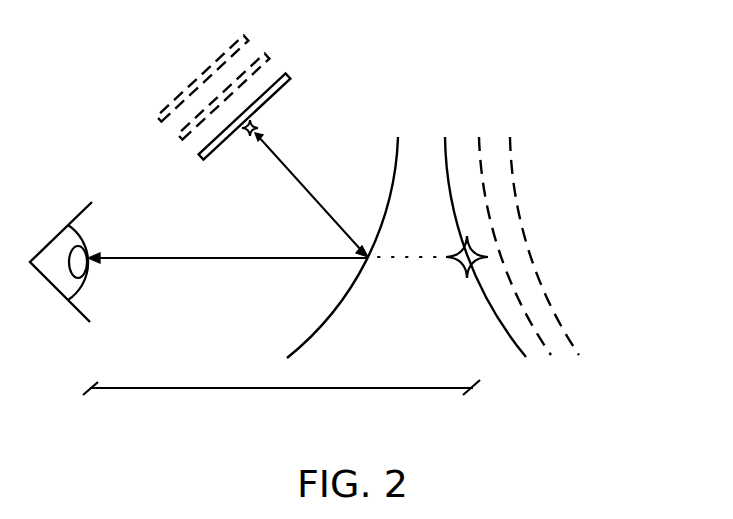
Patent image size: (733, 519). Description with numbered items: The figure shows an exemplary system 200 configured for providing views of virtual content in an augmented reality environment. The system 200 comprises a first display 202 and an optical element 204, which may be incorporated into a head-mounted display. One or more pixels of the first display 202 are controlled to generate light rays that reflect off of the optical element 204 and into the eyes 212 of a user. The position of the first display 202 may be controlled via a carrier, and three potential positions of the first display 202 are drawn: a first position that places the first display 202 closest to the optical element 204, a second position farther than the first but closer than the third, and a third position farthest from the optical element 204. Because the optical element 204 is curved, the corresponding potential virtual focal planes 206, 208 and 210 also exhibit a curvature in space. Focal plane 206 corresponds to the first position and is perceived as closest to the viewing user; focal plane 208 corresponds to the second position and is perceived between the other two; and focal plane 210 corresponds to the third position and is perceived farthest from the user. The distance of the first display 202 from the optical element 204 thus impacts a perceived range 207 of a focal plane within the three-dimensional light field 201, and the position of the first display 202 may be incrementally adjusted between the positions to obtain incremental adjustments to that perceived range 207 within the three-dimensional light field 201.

The system 200 is at (385, 72).
The three-dimensional light field 201 is at (525, 137).
The first display 202 is at (277, 70).
The optical element 204 is at (353, 296).
The focal plane 206 is at (527, 358).
The perceived range 207 is at (290, 388).
The focal plane 208 is at (552, 356).
The focal plane 210 is at (585, 356).
The eyes 212 is at (78, 248).